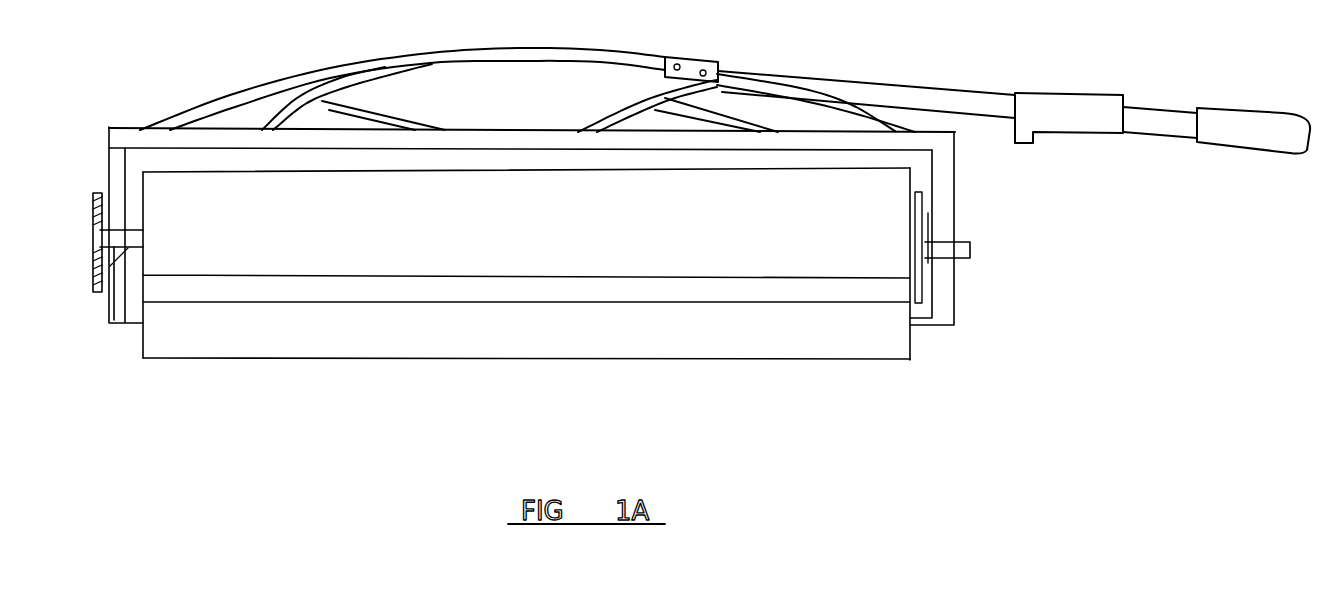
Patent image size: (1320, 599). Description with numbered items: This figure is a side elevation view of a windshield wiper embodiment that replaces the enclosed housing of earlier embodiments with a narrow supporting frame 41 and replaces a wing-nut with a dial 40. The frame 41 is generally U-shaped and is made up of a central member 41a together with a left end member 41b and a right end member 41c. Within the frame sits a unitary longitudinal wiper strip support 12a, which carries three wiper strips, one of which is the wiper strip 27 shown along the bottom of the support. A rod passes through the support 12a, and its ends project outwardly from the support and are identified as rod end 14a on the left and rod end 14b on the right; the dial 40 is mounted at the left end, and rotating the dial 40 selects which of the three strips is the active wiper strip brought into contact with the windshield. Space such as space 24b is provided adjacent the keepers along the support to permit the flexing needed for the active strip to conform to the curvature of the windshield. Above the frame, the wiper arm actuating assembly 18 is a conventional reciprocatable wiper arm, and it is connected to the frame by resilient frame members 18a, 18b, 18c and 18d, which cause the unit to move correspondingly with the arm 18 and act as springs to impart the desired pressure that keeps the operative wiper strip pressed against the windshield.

The wiper arm 18 is at (858, 87).
The resilient frame member 18a is at (437, 65).
The resilient frame member 18b is at (387, 108).
The resilient frame member 18c is at (617, 107).
The resilient frame member 18d is at (683, 85).
The supporting frame 41 is at (531, 180).
The central member 41a is at (440, 140).
The left end member 41b is at (115, 165).
The right end member 41c is at (942, 183).
The dial 40 is at (93, 233).
The rod end 14a is at (90, 287).
The rod end 14b is at (960, 247).
The wiper strip support 12a is at (715, 241).
The space 24b is at (541, 181).
The wiper strip 27 is at (763, 348).